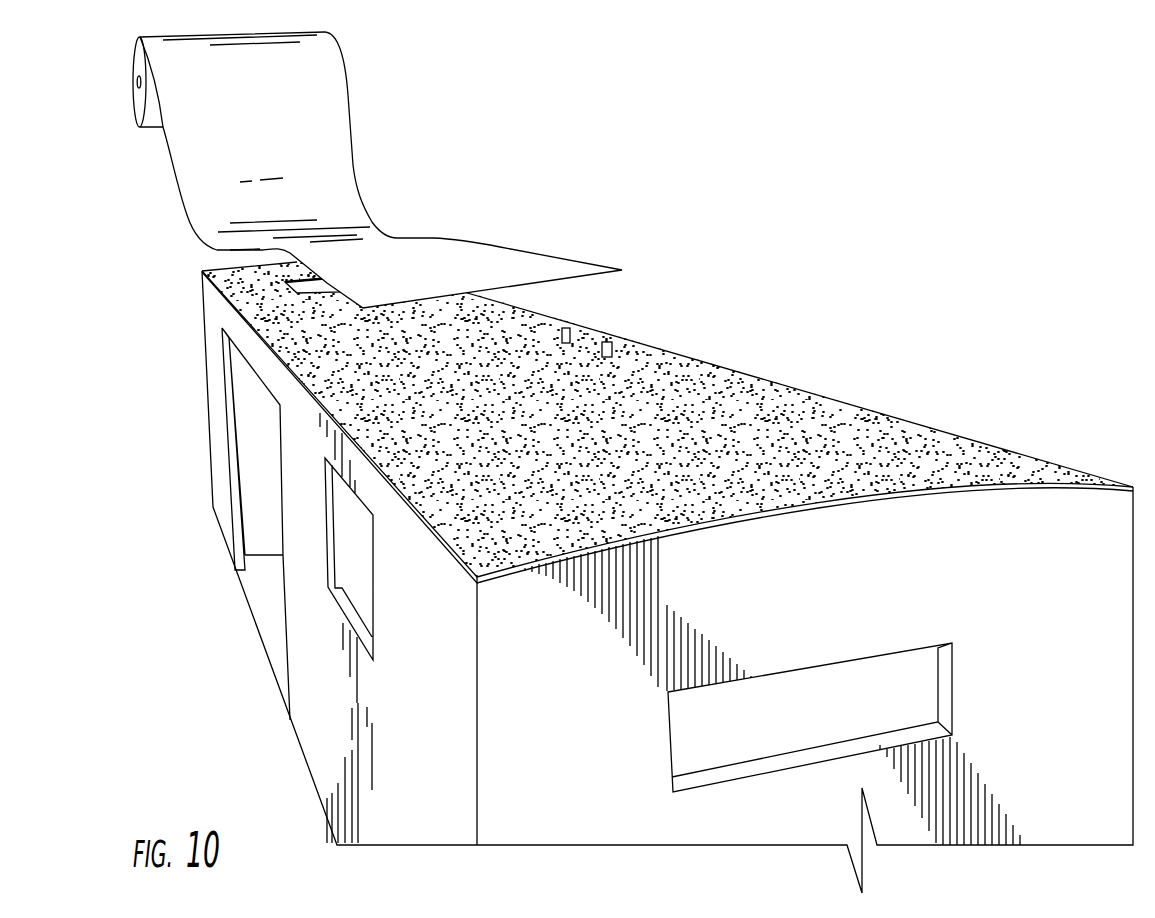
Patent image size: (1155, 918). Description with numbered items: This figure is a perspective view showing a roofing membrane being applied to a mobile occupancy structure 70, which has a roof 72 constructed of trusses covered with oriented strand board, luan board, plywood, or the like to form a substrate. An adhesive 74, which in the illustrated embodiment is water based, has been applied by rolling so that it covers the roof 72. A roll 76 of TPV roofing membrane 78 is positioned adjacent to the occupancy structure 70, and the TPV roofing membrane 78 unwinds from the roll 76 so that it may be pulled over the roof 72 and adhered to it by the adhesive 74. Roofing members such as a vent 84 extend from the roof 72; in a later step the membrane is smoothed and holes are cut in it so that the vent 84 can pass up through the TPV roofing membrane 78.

The mobile occupancy structure 70 is at (310, 651).
The roof 72 is at (908, 435).
The adhesive 74 is at (322, 313).
The roll 76 is at (134, 104).
The TPV roofing membrane 78 is at (212, 222).
The vent 84 is at (607, 342).